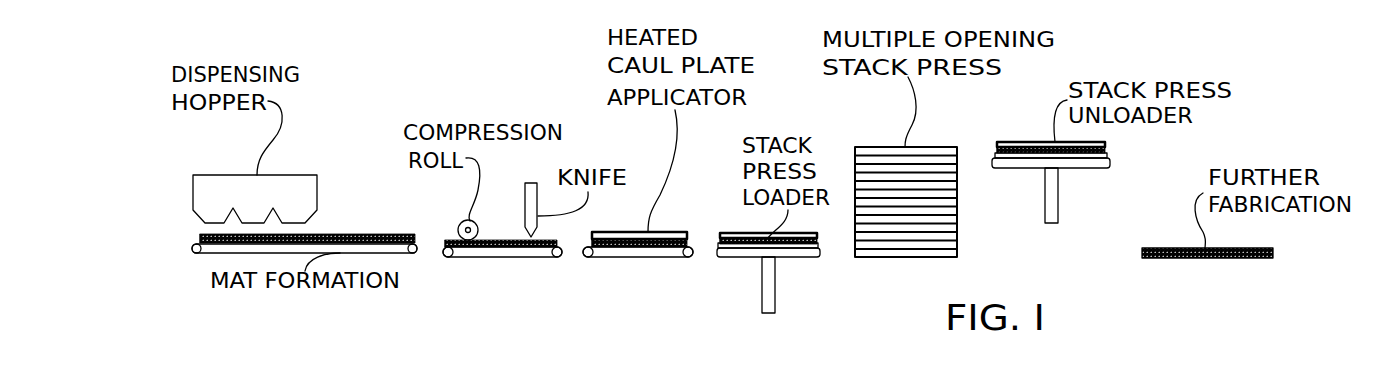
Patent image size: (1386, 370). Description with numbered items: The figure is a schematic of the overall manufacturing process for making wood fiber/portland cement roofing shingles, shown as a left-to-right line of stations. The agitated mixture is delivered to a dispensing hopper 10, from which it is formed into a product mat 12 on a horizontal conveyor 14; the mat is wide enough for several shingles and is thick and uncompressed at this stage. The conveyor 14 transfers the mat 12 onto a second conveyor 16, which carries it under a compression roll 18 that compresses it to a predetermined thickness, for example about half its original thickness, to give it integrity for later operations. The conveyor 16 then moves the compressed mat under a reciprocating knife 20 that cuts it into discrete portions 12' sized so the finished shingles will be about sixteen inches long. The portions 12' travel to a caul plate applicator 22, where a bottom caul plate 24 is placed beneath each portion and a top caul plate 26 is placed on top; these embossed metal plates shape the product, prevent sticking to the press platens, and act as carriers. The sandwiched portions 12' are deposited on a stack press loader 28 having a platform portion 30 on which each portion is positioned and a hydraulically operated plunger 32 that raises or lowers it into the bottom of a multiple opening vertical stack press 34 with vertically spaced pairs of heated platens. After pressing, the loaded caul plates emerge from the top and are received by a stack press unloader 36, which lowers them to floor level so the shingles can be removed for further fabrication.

The dispensing hopper 10 is at (193, 188).
The product mat 12 is at (271, 224).
The horizontal conveyor 14 is at (393, 255).
The second conveyor 16 is at (500, 257).
The compression roll 18 is at (458, 227).
The reciprocating knife 20 is at (528, 183).
The caul plate applicator 22 is at (637, 263).
The bottom caul plate 24 is at (586, 243).
The top caul plate 26 is at (672, 232).
The mat portions 12' is at (731, 273).
The stack press loader 28 is at (785, 277).
The platform portion 30 is at (735, 258).
The hydraulically operated plunger 32 is at (762, 302).
The multiple opening vertical stack press 34 is at (965, 239).
The stack press unloader 36 is at (1069, 181).